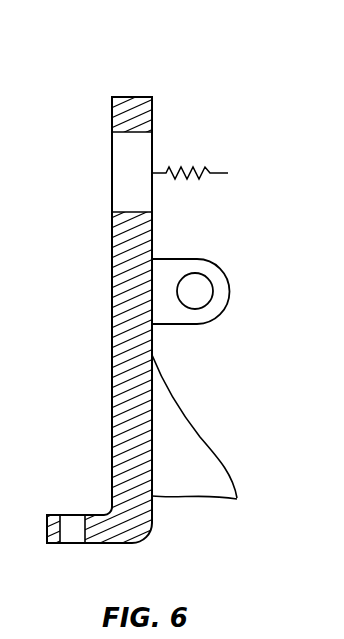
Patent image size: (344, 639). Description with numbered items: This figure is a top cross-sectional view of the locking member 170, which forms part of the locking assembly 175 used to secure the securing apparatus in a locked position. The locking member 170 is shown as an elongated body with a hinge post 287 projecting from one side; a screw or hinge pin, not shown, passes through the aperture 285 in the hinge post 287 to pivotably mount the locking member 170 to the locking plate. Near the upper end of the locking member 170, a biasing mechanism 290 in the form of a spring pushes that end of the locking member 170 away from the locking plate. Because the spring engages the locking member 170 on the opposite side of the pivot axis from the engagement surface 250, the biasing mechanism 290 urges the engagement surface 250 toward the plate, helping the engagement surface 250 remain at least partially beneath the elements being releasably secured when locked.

The locking member 170 is at (110, 450).
The locking assembly 175 is at (204, 58).
The engagement surface 250 is at (210, 497).
The aperture 285 is at (195, 302).
The hinge post 287 is at (229, 290).
The biasing mechanism 290 is at (190, 163).